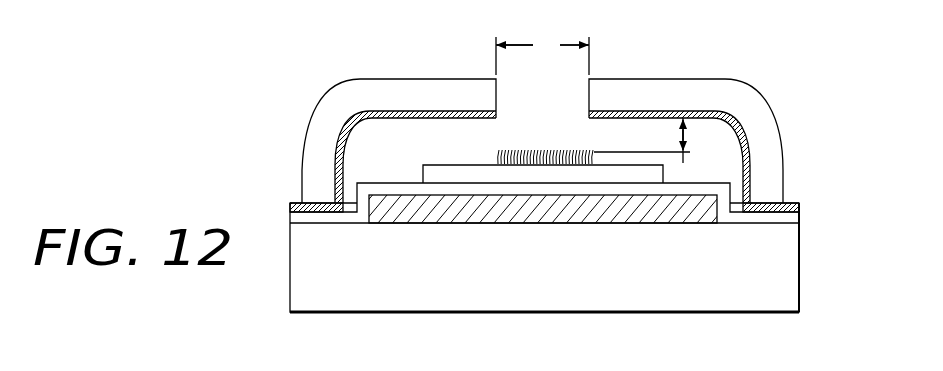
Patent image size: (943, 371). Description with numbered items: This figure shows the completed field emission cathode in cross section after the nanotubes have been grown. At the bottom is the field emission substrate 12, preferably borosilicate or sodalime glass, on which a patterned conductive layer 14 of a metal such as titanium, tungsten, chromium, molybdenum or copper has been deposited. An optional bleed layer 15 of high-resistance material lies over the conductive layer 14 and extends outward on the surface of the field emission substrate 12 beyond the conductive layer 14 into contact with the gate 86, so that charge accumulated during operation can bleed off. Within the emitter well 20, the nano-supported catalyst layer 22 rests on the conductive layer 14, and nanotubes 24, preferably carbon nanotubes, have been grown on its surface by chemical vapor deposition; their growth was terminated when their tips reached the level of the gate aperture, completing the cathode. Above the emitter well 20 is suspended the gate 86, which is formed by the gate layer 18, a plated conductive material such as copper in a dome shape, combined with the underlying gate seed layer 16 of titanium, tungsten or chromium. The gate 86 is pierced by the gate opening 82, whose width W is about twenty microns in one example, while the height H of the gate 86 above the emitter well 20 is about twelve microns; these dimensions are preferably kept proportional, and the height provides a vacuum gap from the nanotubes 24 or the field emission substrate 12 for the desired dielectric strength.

The field emission substrate 12 is at (777, 290).
The conductive layer 14 is at (640, 217).
The bleed layer 15 is at (782, 222).
The gate seed layer 16 is at (427, 110).
The gate layer 18 is at (683, 88).
The emitter well 20 is at (579, 142).
The nano-supported catalyst layer 22 is at (430, 175).
The nanotubes 24 is at (497, 158).
The gate opening 82 is at (523, 90).
The gate 86 is at (771, 91).